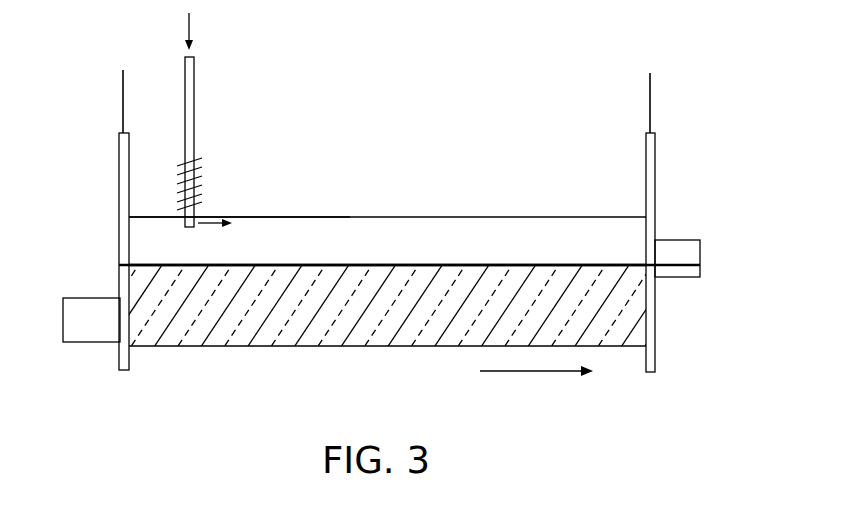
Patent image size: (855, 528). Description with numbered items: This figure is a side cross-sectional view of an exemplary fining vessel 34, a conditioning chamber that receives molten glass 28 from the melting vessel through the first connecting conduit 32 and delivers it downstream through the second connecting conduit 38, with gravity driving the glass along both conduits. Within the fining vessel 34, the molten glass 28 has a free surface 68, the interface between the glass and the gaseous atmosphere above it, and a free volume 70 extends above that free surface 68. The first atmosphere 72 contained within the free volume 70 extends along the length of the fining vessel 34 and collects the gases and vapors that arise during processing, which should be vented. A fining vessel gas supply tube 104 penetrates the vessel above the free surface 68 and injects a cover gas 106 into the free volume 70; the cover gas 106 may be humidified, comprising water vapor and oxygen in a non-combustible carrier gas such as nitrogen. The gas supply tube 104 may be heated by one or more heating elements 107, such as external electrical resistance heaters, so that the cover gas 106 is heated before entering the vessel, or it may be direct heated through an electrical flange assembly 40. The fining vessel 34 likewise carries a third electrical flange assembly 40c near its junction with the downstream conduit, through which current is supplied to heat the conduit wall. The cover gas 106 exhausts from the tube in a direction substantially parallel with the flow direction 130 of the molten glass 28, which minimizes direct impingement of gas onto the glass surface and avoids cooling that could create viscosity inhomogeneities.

The molten glass 28 is at (541, 318).
The first connecting conduit 32 is at (93, 343).
The fining vessel 34 is at (455, 211).
The second connecting conduit 38 is at (678, 278).
The electrical flange assembly 40 is at (98, 127).
The third electrical flange assembly 40c is at (670, 157).
The free surface 68 is at (460, 265).
The free volume 70 is at (400, 250).
The first atmosphere 72 is at (314, 236).
The fining vessel gas supply tube 104 is at (208, 106).
The cover gas 106 is at (190, 28).
The heating elements 107 is at (200, 188).
The flow direction 130 is at (536, 385).